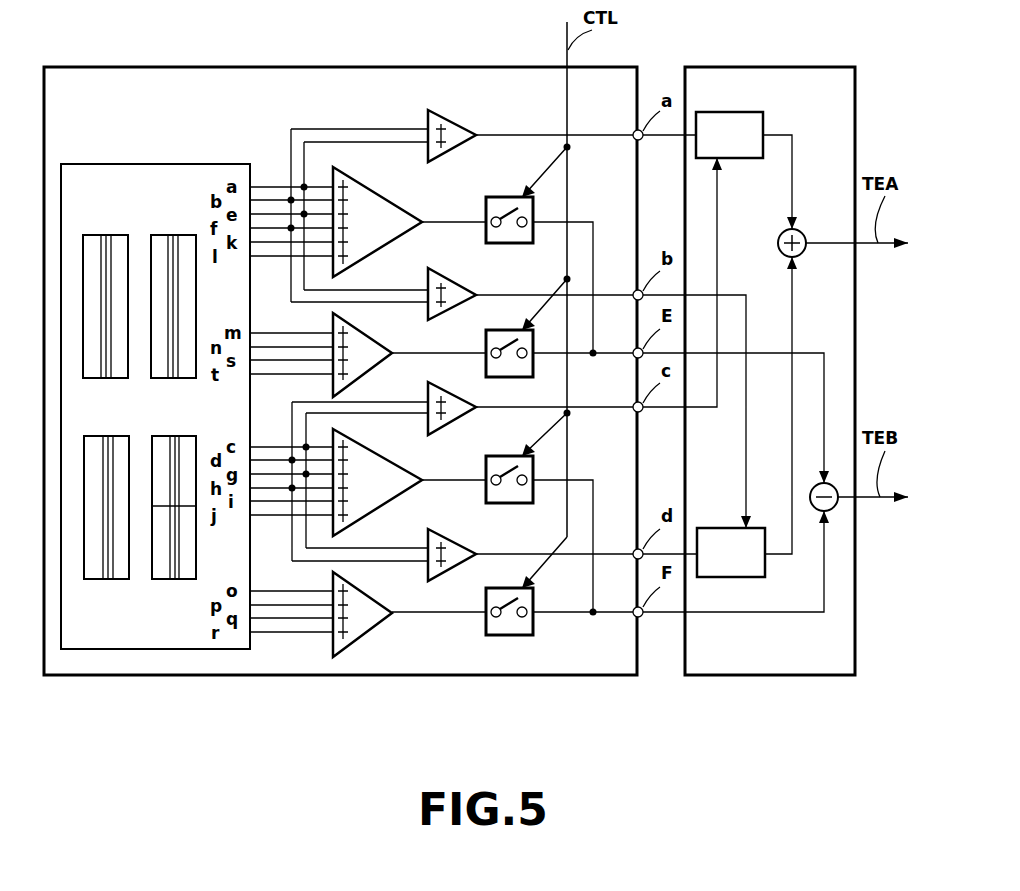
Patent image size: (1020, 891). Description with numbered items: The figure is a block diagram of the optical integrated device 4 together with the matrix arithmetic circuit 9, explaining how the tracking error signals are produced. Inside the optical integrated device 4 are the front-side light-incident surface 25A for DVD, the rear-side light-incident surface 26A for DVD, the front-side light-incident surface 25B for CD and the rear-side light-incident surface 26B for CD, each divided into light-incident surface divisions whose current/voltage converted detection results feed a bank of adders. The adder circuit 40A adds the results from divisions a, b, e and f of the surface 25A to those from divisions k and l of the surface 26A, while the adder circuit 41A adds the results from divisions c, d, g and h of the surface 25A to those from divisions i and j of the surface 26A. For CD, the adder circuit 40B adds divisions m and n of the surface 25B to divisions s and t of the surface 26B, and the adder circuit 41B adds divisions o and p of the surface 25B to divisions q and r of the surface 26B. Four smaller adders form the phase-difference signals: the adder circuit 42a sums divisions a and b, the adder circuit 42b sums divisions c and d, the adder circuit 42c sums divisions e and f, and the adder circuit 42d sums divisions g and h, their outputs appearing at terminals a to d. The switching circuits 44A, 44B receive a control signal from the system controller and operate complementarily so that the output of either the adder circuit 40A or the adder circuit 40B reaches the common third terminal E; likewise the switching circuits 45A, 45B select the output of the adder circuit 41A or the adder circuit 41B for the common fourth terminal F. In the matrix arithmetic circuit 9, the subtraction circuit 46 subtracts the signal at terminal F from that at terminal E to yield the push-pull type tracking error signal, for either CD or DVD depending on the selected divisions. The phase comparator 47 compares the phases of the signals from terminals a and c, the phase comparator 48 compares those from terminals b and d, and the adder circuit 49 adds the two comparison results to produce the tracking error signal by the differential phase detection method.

The optical integrated device 4 is at (338, 67).
The matrix arithmetic circuit 9 is at (830, 67).
The rear-side light-incident surface for CD 26B is at (94, 230).
The rear-side light-incident surface for DVD 26A is at (160, 230).
The front-side light-incident surface for CD 25B is at (95, 432).
The front-side light-incident surface for DVD 25A is at (160, 432).
The adder circuit 40A is at (405, 210).
The adder circuit 40B is at (378, 337).
The adder circuit 41A is at (405, 470).
The adder circuit 41B is at (375, 625).
The adder circuit 42a is at (461, 112).
The adder circuit 42b is at (461, 384).
The adder circuit 42c is at (461, 270).
The adder circuit 42d is at (461, 531).
The switching circuit 44A is at (498, 243).
The switching circuit 44B is at (498, 377).
The switching circuit 45A is at (498, 503).
The switching circuit 45B is at (520, 635).
The subtraction circuit 46 is at (815, 509).
The phase comparator 47 is at (741, 158).
The phase comparator 48 is at (718, 528).
The adder circuit 49 is at (802, 231).